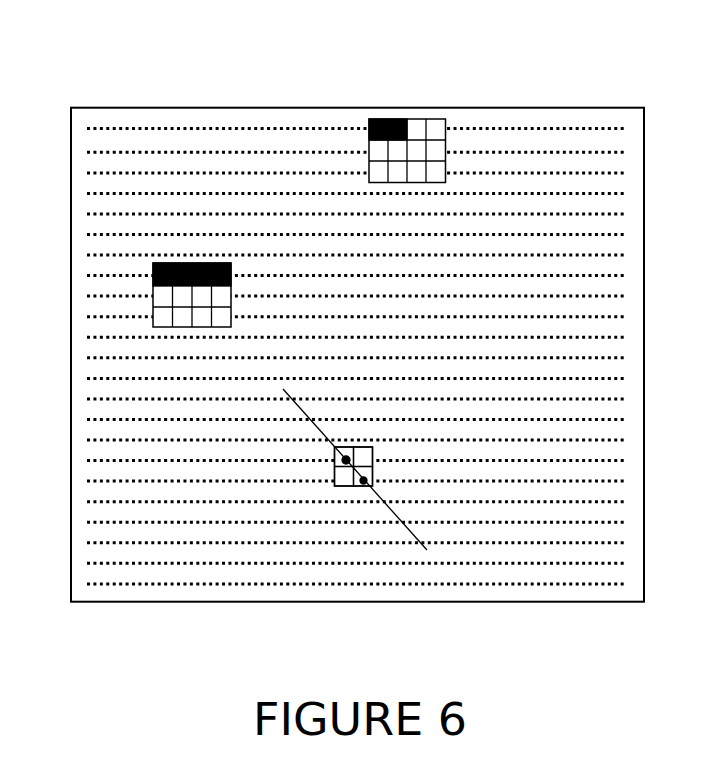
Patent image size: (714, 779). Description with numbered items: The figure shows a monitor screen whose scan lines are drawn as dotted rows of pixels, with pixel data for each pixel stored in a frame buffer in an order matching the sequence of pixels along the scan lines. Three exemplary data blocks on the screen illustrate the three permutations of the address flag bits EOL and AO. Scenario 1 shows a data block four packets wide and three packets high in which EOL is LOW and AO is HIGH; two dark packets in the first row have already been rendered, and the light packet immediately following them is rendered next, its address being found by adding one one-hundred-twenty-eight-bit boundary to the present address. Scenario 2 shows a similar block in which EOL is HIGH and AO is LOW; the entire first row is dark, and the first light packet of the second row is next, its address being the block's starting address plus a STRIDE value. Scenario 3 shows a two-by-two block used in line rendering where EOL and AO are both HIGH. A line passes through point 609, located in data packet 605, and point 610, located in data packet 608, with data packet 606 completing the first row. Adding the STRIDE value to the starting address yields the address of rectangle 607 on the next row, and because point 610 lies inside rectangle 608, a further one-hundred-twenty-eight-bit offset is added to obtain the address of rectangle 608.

The scenario 1 is at (408, 110).
The scenario 2 is at (153, 295).
The scenario 3 is at (328, 529).
The data packet 605 is at (335, 458).
The data packet 606 is at (370, 447).
The rectangle 607 is at (333, 475).
The rectangle 608 is at (362, 489).
The point 609 is at (347, 456).
The point 610 is at (366, 481).